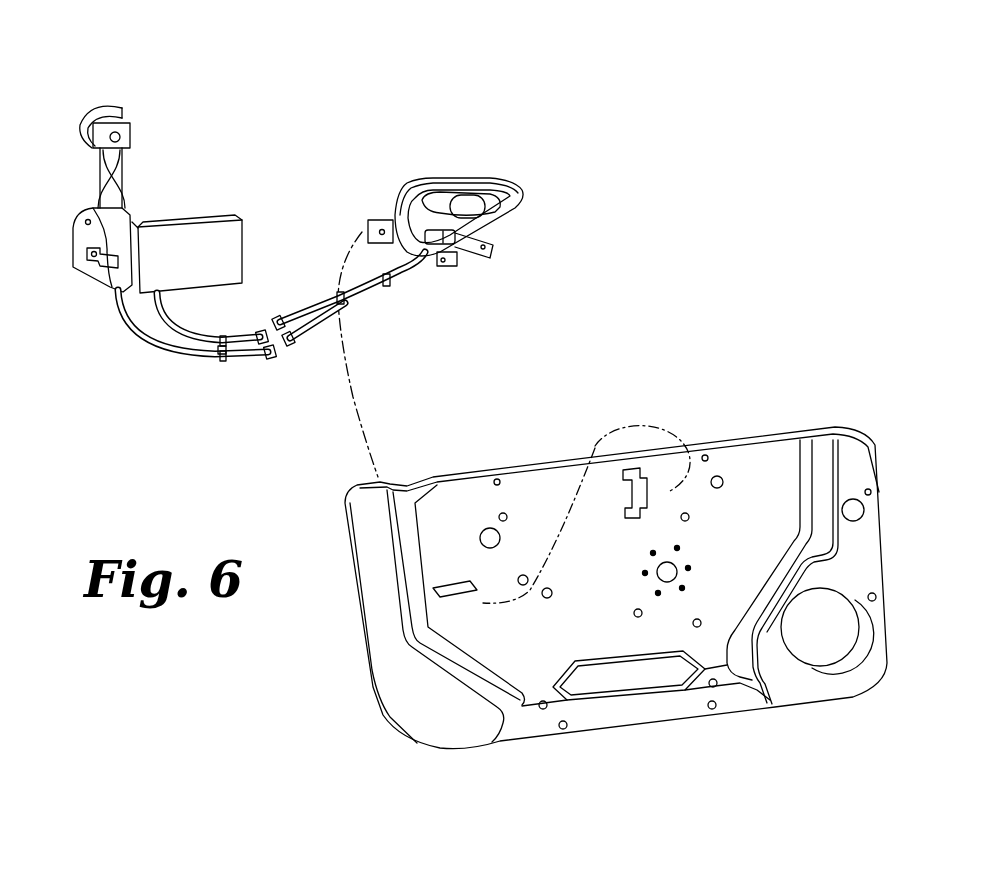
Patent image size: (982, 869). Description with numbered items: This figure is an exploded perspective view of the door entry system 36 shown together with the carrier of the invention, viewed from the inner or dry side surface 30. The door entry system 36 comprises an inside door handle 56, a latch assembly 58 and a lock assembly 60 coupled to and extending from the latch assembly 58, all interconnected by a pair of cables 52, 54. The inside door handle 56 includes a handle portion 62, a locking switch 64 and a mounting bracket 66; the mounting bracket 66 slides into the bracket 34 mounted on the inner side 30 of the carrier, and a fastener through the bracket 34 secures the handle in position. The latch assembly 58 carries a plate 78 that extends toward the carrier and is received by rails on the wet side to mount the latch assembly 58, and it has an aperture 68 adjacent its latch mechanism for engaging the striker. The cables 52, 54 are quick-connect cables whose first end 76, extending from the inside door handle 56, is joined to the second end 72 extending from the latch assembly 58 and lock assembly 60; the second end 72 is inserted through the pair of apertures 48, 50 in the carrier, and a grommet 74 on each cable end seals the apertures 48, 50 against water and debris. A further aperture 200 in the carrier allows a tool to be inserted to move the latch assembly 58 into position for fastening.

The inner or dry side surface 30 is at (415, 710).
The bracket 34 is at (640, 468).
The door entry system 36 is at (238, 88).
The aperture 48 is at (525, 578).
The aperture 50 is at (552, 600).
The cable 52 is at (170, 326).
The cable 54 is at (170, 355).
The inside door handle 56 is at (456, 176).
The latch assembly 58 is at (73, 238).
The lock assembly 60 is at (110, 105).
The handle portion 62 is at (436, 205).
The locking switch 64 is at (493, 250).
The mounting bracket 66 is at (366, 222).
The aperture 68 is at (90, 262).
The second end 72 is at (258, 320).
The grommet 74 is at (222, 357).
The first end 76 is at (224, 338).
The plate 78 is at (190, 216).
The aperture 200 is at (452, 578).